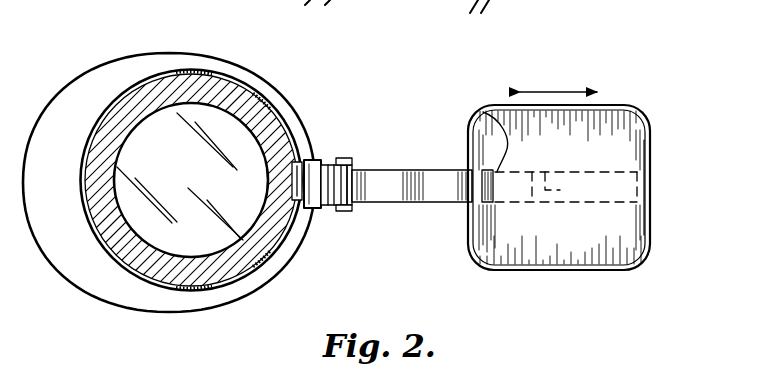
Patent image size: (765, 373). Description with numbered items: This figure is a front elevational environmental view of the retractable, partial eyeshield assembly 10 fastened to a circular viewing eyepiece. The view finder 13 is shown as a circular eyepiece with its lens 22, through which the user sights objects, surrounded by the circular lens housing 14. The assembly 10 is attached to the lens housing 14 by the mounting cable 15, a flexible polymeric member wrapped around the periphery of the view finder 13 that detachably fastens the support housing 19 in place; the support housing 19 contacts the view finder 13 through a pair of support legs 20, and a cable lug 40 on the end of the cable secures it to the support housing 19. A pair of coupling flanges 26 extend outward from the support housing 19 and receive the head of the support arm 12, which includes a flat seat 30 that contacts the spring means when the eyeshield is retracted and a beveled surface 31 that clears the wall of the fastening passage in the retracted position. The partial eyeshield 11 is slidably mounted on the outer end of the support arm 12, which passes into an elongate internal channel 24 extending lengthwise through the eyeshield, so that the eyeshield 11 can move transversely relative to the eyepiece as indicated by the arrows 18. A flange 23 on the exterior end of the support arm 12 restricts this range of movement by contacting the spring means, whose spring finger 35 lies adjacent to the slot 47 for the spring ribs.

The retractable, partial eyeshield assembly 10 is at (635, 281).
The partial eyeshield 11 is at (566, 268).
The support arm 12 is at (424, 168).
The view finder 13 is at (133, 56).
The circular lens housing 14 is at (223, 268).
The mounting cable 15 is at (135, 278).
The arrows 18 is at (550, 90).
The support housing 19 is at (323, 161).
The support legs 20 is at (300, 168).
The lens 22 is at (209, 108).
The flange 23 is at (548, 200).
The elongate internal channel 24 is at (642, 156).
The coupling flanges 26 is at (356, 164).
The flat seat 30 is at (331, 208).
The beveled surface 31 is at (349, 161).
The spring finger 35 is at (478, 184).
The cable lug 40 is at (324, 158).
The slot 47 is at (485, 112).